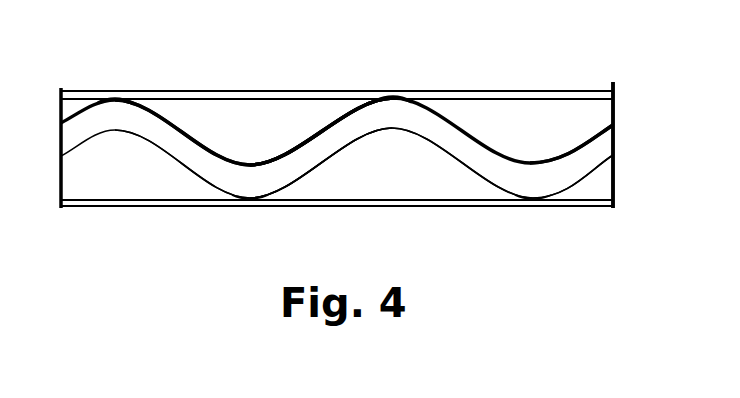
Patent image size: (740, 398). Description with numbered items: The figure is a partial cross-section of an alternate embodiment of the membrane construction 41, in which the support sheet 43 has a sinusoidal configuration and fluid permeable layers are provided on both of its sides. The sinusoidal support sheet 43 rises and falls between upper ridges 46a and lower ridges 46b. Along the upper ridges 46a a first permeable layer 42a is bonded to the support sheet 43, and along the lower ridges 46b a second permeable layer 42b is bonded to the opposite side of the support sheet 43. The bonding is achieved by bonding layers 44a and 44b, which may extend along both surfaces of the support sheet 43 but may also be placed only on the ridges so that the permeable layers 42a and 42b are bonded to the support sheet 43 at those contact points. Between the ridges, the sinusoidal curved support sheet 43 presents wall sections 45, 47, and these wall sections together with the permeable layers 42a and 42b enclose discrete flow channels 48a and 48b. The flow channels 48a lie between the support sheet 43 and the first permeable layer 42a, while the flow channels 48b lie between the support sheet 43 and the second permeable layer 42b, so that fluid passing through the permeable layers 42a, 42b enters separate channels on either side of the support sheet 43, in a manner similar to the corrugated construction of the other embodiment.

The multilayer composite structure 41 is at (627, 51).
The permeable layer 42a is at (516, 84).
The permeable layer 42b is at (617, 196).
The support sheet 43 is at (617, 139).
The bonding layer 44a is at (197, 133).
The bonding layer 44b is at (177, 157).
The wall section 45 is at (453, 135).
The ridge 46a is at (117, 100).
The ridge 46b is at (254, 198).
The wall section 47 is at (332, 133).
The flow channel 48a is at (260, 123).
The flow channel 48b is at (385, 183).